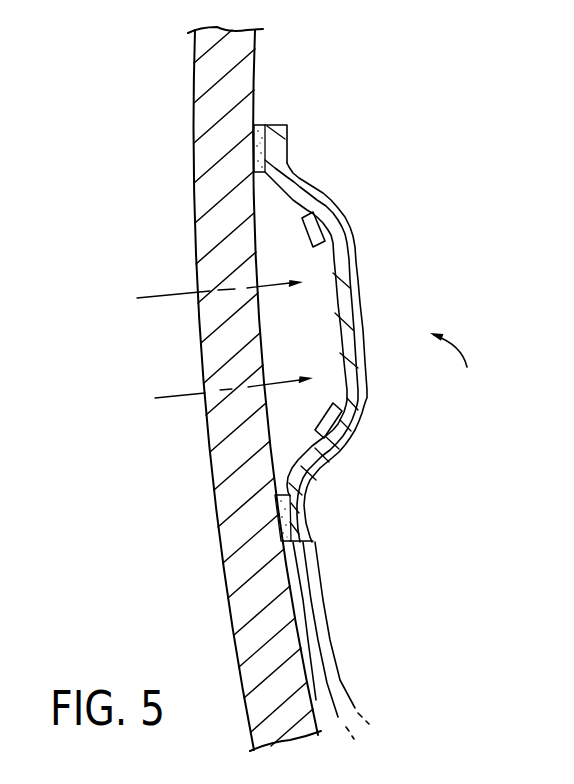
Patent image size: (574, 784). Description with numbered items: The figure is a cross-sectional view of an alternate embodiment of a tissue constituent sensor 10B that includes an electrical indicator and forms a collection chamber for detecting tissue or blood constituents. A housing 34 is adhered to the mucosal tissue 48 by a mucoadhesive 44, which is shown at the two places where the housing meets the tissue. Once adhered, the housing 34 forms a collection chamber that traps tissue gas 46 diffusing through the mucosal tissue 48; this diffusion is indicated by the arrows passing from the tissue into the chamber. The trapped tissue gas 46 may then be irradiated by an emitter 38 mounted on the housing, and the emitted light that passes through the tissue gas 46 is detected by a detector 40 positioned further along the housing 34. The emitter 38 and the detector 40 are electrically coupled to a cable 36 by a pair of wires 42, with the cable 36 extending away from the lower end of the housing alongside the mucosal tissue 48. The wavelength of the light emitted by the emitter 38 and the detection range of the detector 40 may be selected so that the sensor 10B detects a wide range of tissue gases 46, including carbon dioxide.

The tissue constituent sensor 10B is at (460, 366).
The housing 34 is at (316, 184).
The cable 36 is at (328, 607).
The emitter 38 is at (320, 229).
The detector 40 is at (333, 417).
The pair of wires 42 is at (333, 453).
The mucoadhesive 44 is at (262, 124).
The tissue gas 46 is at (165, 293).
The mucosal tissue 48 is at (225, 138).